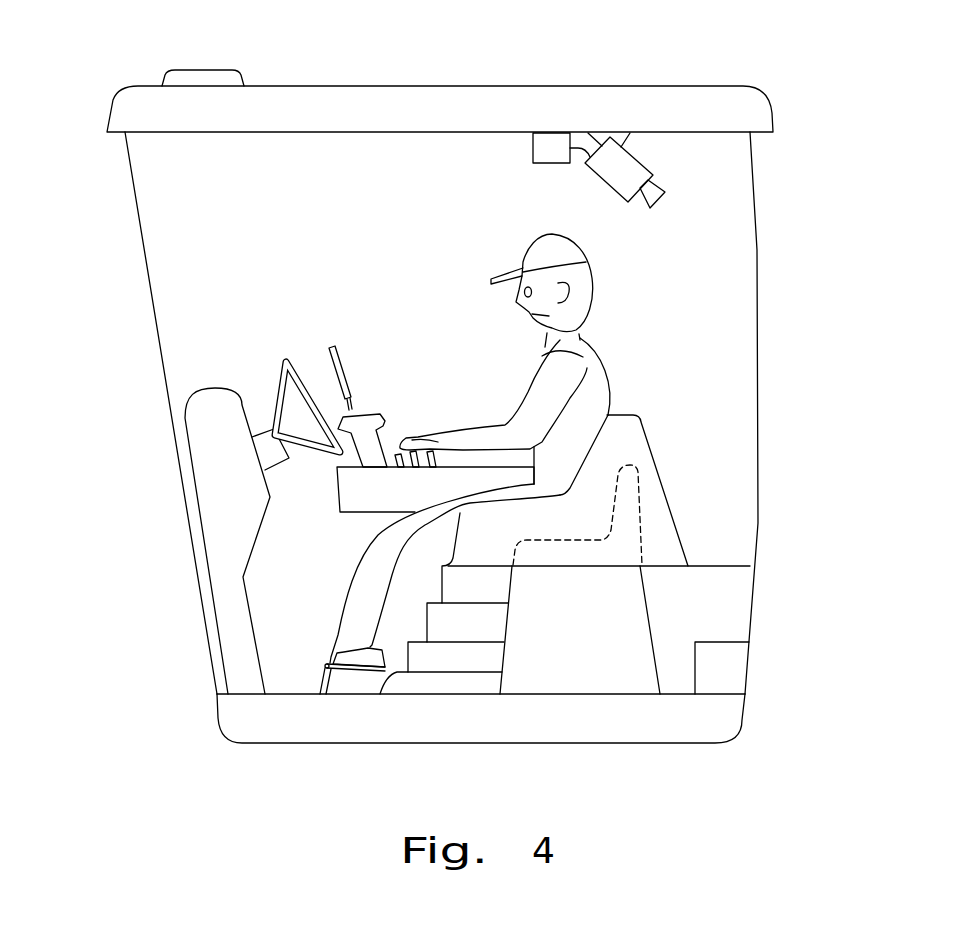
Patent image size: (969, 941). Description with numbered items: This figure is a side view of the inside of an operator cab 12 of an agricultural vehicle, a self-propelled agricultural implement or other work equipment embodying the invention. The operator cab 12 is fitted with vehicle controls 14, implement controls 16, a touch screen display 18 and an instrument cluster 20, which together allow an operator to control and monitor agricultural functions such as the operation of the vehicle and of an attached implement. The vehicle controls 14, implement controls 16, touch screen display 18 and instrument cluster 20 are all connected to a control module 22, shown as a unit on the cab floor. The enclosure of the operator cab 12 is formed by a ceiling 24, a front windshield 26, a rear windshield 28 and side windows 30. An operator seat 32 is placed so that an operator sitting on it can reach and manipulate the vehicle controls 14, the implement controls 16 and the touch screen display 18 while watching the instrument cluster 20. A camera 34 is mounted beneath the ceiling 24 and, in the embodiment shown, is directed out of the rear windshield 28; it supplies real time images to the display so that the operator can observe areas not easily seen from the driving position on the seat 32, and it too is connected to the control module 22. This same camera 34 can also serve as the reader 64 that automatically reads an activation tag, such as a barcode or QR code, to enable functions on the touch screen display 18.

The operator cab 12 is at (441, 395).
The vehicle controls 14 is at (302, 373).
The implement controls 16 is at (392, 447).
The touch screen display 18 is at (340, 365).
The instrument cluster 20 is at (243, 413).
The control module 22 is at (727, 667).
The ceiling 24 is at (368, 132).
The front windshield 26 is at (157, 332).
The rear windshield 28 is at (757, 205).
The side windows 30 is at (278, 180).
The operator seat 32 is at (575, 566).
The camera 34 is at (652, 132).
The reader 64 is at (635, 155).